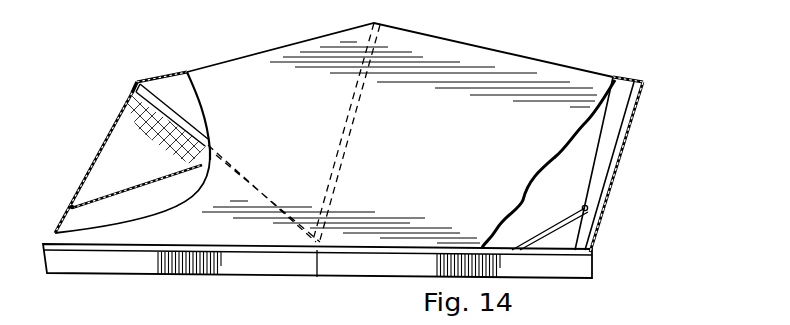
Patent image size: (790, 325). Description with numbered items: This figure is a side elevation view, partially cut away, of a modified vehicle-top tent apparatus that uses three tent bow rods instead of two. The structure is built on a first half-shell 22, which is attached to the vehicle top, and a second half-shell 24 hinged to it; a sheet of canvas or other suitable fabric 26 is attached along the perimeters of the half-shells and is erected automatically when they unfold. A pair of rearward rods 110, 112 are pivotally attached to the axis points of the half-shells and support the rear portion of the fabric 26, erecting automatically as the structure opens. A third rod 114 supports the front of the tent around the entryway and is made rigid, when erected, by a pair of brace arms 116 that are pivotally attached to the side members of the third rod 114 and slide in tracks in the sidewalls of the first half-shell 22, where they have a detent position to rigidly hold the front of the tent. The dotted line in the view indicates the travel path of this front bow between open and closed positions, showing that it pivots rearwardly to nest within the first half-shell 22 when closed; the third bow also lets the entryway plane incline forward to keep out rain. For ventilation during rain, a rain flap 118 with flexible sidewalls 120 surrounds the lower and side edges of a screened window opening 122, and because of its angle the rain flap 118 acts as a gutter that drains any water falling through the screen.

The first half-shell 22 is at (594, 288).
The second half-shell 24 is at (153, 289).
The tent fabric 26 is at (487, 50).
The rearward rod 110 is at (178, 113).
The rearward rod 112 is at (355, 126).
The third rod 114 is at (607, 151).
The brace arms 116 is at (578, 212).
The rain flap 118 is at (137, 192).
The flexible sidewalls 120 is at (113, 166).
The screened window opening 122 is at (122, 124).